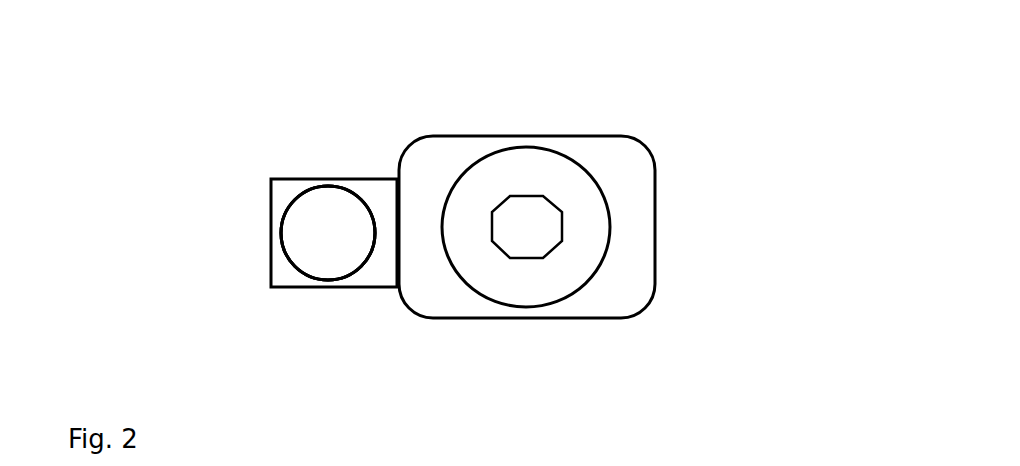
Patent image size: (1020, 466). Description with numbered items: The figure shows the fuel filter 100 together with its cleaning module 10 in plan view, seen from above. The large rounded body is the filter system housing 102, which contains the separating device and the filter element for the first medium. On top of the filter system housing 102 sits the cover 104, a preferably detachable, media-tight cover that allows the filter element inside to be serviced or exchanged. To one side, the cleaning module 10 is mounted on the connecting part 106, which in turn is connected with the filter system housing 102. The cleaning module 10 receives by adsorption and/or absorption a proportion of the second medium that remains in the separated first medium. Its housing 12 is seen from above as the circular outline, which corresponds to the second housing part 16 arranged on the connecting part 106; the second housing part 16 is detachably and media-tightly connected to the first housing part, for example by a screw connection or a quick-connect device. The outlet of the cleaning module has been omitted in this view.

The fuel filter 100 is at (650, 101).
The filter system housing 102 is at (656, 268).
The cover 104 is at (604, 192).
The connecting part 106 is at (271, 280).
The cleaning module 10 is at (302, 191).
The housing 12 is at (335, 187).
The second housing part 16 is at (328, 233).